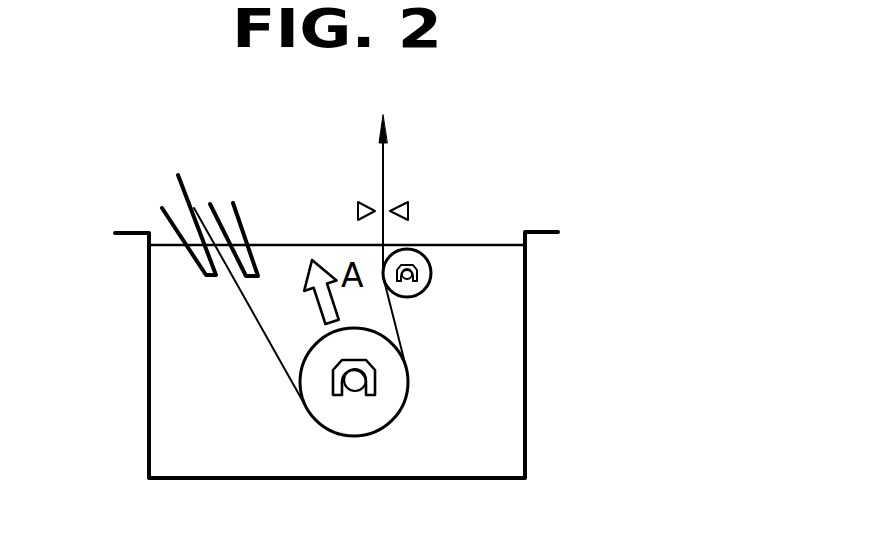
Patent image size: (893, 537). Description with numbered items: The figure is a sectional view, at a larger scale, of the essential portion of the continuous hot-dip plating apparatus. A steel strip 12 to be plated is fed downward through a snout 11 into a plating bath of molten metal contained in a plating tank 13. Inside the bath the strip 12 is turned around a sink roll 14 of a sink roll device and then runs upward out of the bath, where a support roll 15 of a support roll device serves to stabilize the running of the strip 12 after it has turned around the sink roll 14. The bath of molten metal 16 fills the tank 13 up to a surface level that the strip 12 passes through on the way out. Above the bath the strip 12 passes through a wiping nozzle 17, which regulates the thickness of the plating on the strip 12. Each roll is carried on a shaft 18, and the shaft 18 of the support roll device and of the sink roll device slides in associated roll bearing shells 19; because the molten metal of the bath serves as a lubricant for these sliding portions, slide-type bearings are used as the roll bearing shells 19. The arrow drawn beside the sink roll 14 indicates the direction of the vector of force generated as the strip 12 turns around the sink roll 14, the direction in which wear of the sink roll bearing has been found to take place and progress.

The snout 11 is at (178, 217).
The steel strip 12 is at (380, 172).
The plating tank 13 is at (146, 425).
The sink roll 14 is at (388, 405).
The support roll 15 is at (417, 252).
The molten metal bath 16 is at (163, 340).
The wiping nozzle 17 is at (407, 208).
The shaft 18 is at (357, 388).
The roll bearing shells 19 is at (375, 378).